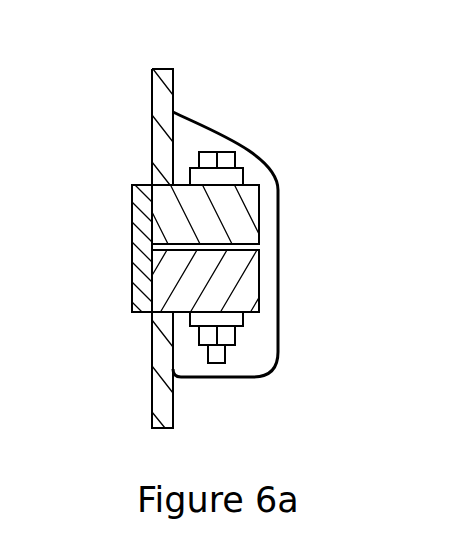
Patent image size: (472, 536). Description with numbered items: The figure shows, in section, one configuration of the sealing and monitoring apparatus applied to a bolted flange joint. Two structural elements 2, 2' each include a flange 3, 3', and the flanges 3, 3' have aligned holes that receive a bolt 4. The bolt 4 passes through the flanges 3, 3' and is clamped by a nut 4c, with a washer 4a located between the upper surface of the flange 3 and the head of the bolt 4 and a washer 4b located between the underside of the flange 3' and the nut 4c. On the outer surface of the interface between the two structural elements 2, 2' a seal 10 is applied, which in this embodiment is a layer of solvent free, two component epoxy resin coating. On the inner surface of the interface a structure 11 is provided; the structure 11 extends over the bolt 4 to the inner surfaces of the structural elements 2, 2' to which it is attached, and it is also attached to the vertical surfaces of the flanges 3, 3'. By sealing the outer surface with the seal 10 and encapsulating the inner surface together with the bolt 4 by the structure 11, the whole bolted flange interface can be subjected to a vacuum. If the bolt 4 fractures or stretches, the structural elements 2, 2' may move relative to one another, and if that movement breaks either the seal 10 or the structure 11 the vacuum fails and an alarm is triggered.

The structural element 2 is at (134, 239).
The structural element 2' is at (114, 379).
The flange 3 is at (267, 217).
The flange 3' is at (271, 291).
The bolt 4 is at (208, 160).
The washer 4a is at (235, 178).
The washer 4b is at (237, 328).
The nut 4c is at (212, 338).
The seal 10 is at (130, 193).
The structure 11 is at (262, 152).